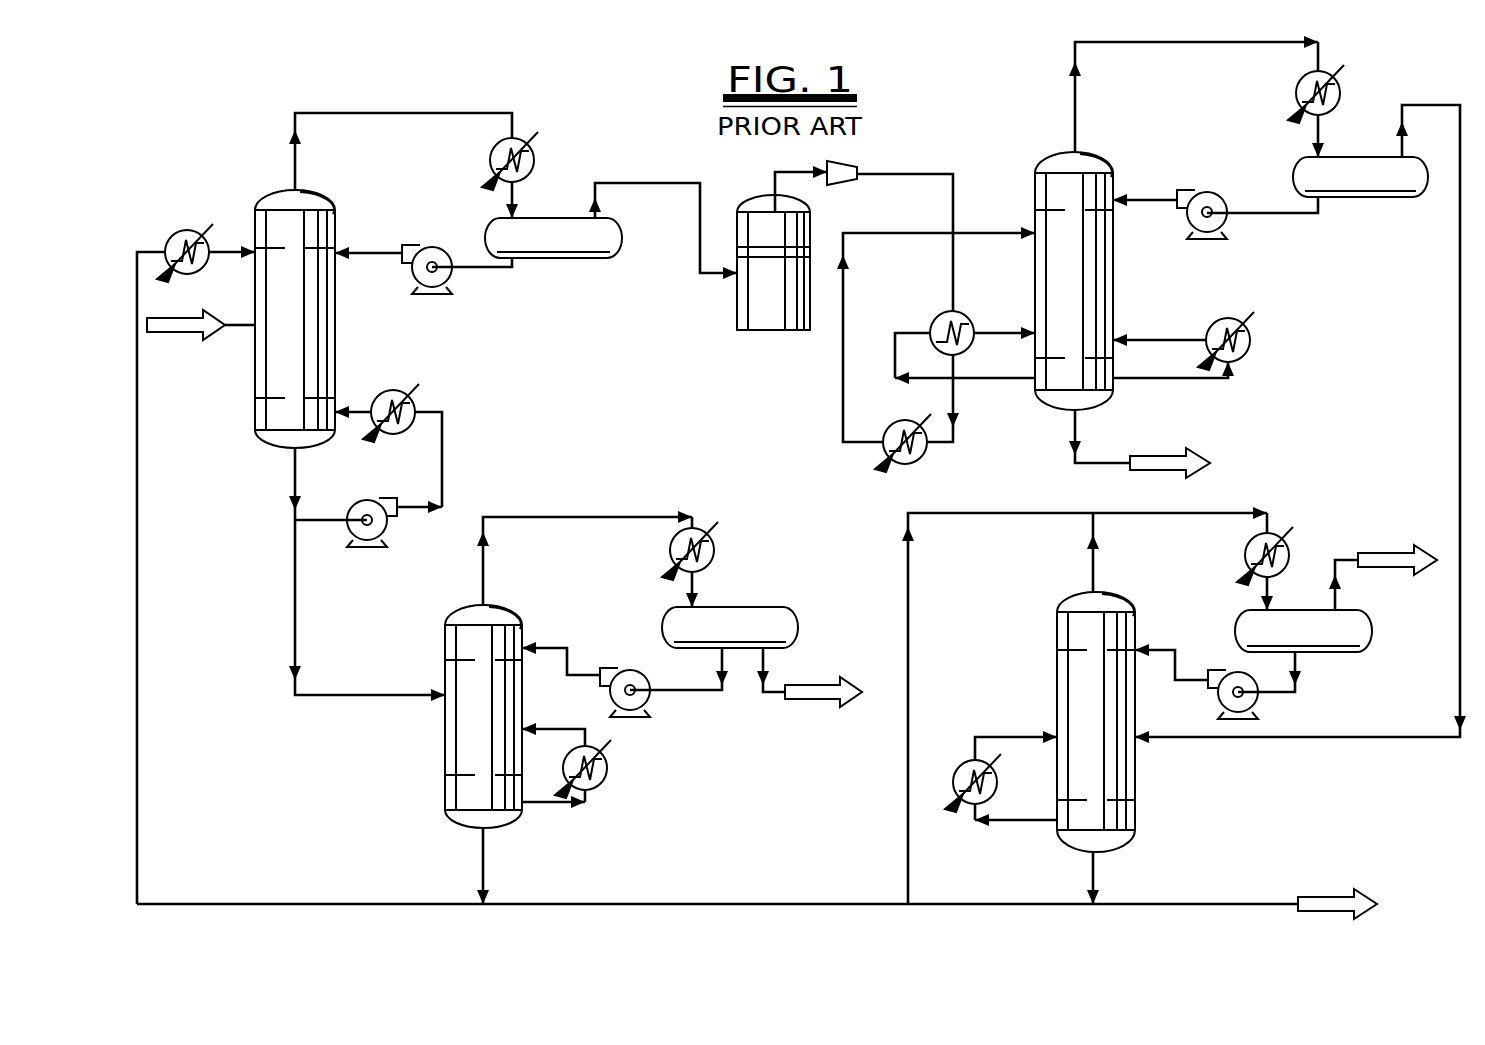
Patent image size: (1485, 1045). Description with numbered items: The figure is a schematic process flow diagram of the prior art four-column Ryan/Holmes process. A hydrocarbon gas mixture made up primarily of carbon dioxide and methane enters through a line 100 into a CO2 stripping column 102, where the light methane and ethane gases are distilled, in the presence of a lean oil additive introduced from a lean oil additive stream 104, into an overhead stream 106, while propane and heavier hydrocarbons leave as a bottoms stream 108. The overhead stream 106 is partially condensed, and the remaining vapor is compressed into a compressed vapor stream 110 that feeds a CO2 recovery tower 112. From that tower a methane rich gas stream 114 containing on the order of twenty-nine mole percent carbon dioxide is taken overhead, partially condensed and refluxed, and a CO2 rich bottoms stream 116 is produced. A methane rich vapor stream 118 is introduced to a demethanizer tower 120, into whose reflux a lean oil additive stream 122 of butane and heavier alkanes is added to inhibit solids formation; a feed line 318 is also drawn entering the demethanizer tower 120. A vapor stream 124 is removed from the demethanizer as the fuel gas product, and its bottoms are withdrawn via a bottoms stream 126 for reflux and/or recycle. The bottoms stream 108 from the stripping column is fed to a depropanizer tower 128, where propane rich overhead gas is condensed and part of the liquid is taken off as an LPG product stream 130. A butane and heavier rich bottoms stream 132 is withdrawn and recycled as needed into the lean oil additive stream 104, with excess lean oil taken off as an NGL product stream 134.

The line 100 is at (188, 332).
The CO2 stripping column 102 is at (333, 352).
The lean oil additive stream 104 is at (137, 568).
The overhead stream 106 is at (295, 163).
The bottoms stream 108 is at (296, 590).
The compressed vapor stream 110 is at (892, 172).
The CO2 recovery tower 112 is at (1113, 178).
The methane rich gas stream 114 is at (1075, 97).
The CO2 rich bottoms stream 116 is at (1160, 455).
The methane rich vapor stream 118 is at (1457, 322).
The demethanizer tower 120 is at (1060, 655).
The lean oil additive stream 122 is at (905, 627).
The vapor stream 124 is at (1345, 555).
The bottoms stream 126 is at (1100, 866).
The depropanizer tower 128 is at (455, 645).
The LPG product stream 130 is at (822, 693).
The bottoms stream 132 is at (483, 862).
The NGL product stream 134 is at (1340, 895).
The feed line 318 is at (1303, 742).